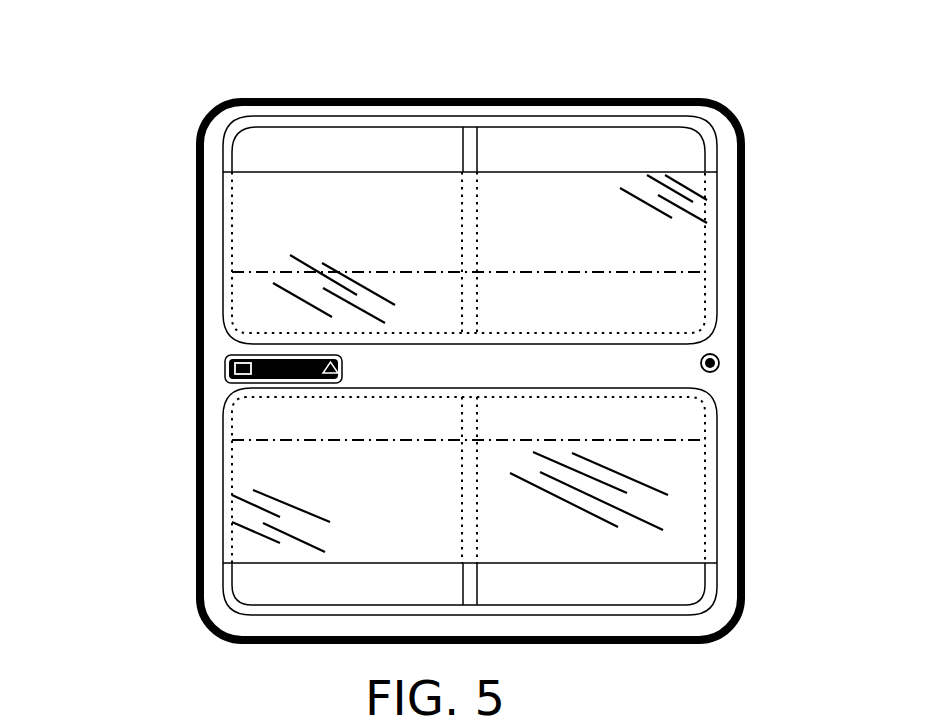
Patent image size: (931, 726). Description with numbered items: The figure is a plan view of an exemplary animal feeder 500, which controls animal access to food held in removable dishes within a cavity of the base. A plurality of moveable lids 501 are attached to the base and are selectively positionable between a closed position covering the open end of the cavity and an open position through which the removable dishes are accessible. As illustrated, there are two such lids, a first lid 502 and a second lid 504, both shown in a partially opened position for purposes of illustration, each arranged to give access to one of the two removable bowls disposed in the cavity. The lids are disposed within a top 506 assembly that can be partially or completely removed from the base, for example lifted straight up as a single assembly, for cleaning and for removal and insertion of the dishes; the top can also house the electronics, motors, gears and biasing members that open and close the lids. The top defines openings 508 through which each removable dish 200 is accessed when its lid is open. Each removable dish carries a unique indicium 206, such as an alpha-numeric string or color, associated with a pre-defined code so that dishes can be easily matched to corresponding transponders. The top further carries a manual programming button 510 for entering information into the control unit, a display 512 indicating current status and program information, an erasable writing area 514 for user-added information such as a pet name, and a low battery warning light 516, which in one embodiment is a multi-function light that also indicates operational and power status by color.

The animal feeder 500 is at (166, 145).
The moveable lids 501 is at (413, 170).
The first lid 502 is at (317, 170).
The second lid 504 is at (292, 564).
The top assembly 506 is at (200, 343).
The openings 508 is at (227, 207).
The removable tray or dish 200 is at (225, 281).
The unique indicium 206 is at (612, 140).
The manual programming button 510 is at (225, 369).
The display 512 is at (225, 378).
The erasable writing area 514 is at (623, 370).
The low battery warning light 516 is at (718, 360).